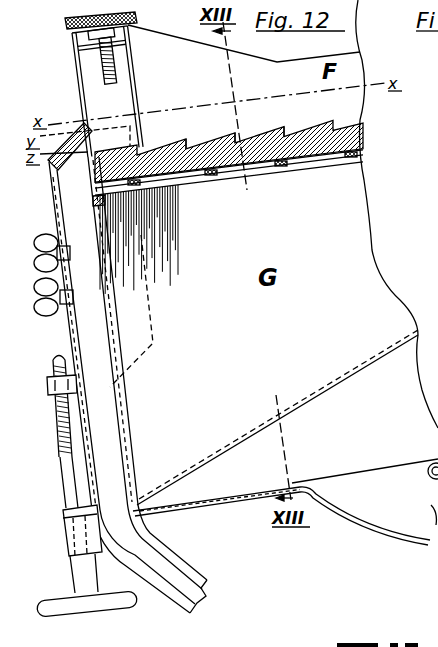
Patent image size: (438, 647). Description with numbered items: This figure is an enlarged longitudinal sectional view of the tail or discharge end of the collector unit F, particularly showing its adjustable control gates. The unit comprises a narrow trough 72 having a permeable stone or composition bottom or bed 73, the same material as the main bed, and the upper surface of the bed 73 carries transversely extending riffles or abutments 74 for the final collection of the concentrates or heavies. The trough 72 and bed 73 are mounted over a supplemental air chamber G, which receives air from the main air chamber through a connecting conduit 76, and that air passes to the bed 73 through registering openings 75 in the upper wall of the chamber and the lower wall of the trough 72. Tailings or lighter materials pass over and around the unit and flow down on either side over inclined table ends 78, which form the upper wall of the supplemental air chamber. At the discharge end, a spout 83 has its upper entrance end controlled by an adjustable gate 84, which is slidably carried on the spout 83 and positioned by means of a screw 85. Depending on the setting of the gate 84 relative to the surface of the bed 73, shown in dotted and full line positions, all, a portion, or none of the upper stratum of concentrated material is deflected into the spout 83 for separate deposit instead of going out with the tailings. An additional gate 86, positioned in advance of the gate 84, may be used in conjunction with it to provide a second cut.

The trough 72 is at (244, 61).
The bottom or bed 73 is at (363, 131).
The riffles or abutments 74 is at (287, 129).
The registering openings 75 is at (167, 187).
The connecting conduit 76 is at (285, 502).
The inclined table ends 78 is at (323, 388).
The spout 83 is at (142, 385).
The adjustable gate 84 is at (53, 180).
The screw 85 is at (70, 480).
The additional gate 86 is at (138, 68).